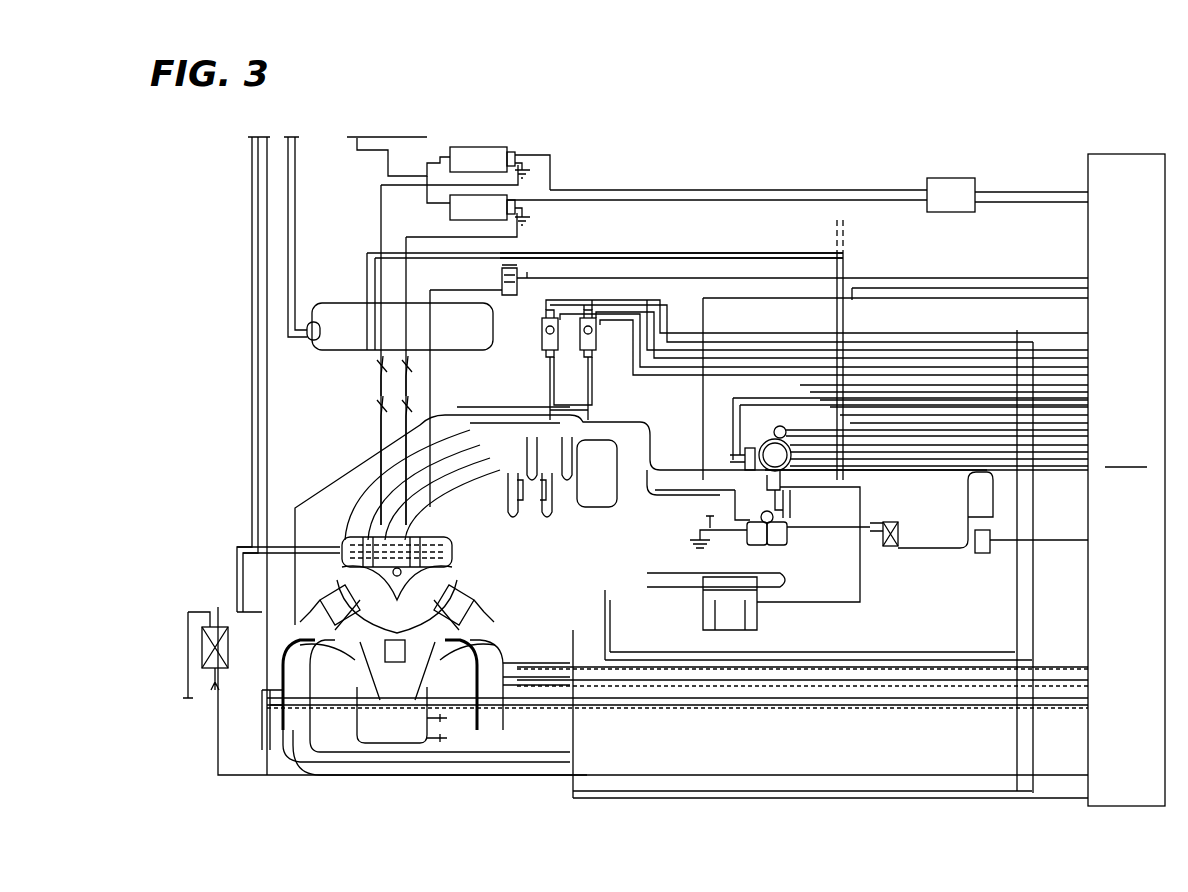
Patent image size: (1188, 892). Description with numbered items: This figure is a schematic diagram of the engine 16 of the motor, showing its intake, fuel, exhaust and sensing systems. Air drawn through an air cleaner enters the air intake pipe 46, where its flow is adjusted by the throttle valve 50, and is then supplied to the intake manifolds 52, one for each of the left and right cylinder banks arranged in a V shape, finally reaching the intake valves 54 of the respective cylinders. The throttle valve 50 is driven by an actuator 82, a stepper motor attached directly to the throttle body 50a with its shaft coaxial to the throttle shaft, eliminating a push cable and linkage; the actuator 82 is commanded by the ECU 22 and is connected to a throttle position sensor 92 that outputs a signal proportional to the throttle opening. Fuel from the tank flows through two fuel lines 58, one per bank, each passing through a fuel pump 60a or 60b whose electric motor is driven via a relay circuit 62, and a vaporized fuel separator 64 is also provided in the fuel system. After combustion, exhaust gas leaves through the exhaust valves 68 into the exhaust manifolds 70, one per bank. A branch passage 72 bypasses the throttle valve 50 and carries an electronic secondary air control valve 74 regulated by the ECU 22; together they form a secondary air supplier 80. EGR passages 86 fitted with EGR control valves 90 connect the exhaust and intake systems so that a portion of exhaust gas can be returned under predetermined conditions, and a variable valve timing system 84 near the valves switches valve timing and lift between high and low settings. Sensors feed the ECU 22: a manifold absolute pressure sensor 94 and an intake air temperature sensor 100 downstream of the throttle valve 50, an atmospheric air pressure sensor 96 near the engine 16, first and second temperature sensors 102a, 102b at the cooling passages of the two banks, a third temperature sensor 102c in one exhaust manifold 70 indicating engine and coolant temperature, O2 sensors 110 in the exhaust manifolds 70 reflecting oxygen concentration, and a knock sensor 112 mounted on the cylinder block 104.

The ECU 22 is at (1128, 152).
The relay circuit 62 is at (962, 203).
The fuel pump 60a is at (500, 146).
The fuel pump 60b is at (448, 218).
The vaporized fuel separator 64 is at (352, 142).
The fuel lines 58 is at (380, 213).
The EGR control valves 90 is at (543, 330).
The EGR passages 86 is at (552, 392).
The intake manifolds 52 is at (612, 425).
The throttle position sensor 92 is at (768, 350).
The actuator 82 is at (775, 432).
The manifold absolute pressure sensor 94 is at (735, 440).
The throttle body 50a is at (730, 462).
The throttle valve 50 is at (760, 490).
The air intake pipe 46 is at (682, 492).
The secondary air supplier 80 is at (795, 496).
The branch passage 72 is at (775, 520).
The electronic secondary air control valve 74 is at (790, 540).
The atmospheric air pressure sensor 96 is at (982, 554).
The intake air temperature sensor 100 is at (600, 580).
The engine 16 is at (238, 527).
The variable valve timing system 84 is at (310, 585).
The O2 sensors 110 is at (262, 690).
The knock sensor 112 is at (386, 650).
The intake valves 54 is at (370, 650).
The exhaust valves 68 is at (440, 640).
The first temperature sensor 102a is at (470, 655).
The second temperature sensor 102b is at (290, 692).
The third temperature sensor 102c is at (282, 755).
The exhaust manifolds 70 is at (300, 768).
The cylinder block 104 is at (404, 731).